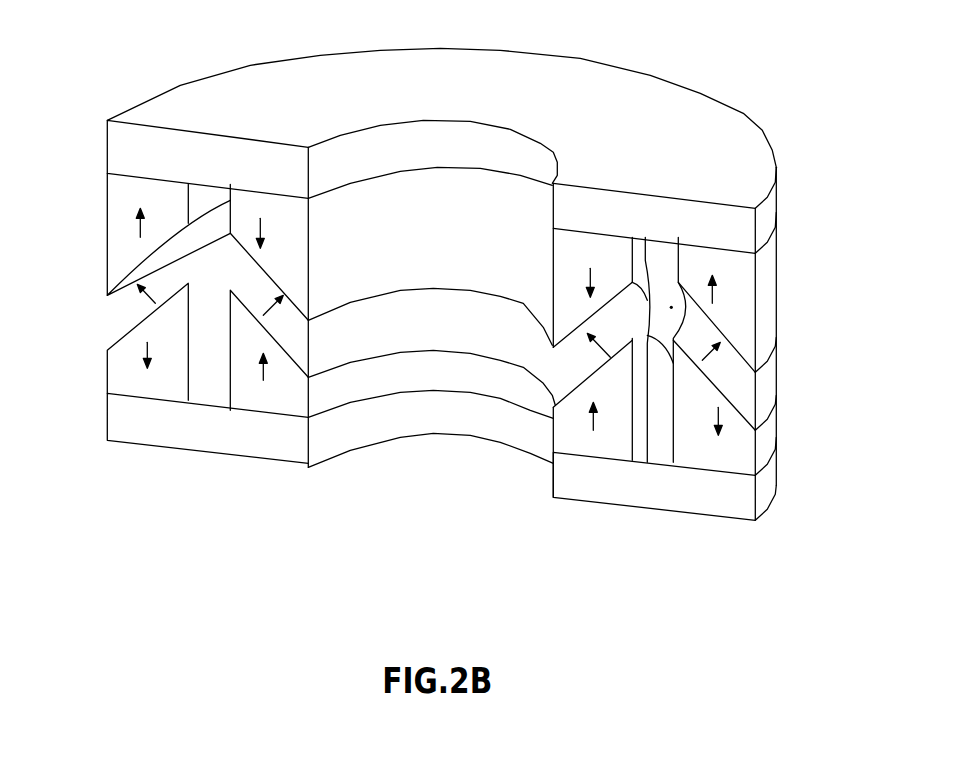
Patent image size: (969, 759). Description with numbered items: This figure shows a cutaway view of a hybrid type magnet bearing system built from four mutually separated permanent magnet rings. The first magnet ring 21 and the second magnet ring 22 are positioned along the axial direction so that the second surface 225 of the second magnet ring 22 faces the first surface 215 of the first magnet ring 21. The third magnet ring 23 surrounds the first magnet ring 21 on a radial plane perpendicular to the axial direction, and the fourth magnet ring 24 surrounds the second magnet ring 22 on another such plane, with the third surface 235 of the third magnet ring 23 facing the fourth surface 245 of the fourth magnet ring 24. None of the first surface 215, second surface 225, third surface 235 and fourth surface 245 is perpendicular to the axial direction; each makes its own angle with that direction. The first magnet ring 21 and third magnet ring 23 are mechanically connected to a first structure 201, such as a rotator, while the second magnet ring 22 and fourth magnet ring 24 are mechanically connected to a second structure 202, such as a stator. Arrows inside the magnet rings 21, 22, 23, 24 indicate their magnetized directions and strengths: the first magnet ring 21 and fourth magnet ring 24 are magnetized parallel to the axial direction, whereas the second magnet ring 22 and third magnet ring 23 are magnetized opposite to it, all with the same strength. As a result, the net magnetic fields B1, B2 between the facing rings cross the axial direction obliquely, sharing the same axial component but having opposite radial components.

The first structure 201 is at (542, 98).
The second structure 202 is at (597, 493).
The first magnet ring 21 is at (270, 218).
The second magnet ring 22 is at (243, 358).
The third magnet ring 23 is at (143, 210).
The fourth magnet ring 24 is at (128, 368).
The third surface 235 is at (147, 270).
The fourth surface 245 is at (762, 371).
The first surface 215 is at (567, 337).
The second surface 225 is at (377, 335).
The net magnetic field B1 is at (426, 334).
The net magnetic field B2 is at (444, 326).